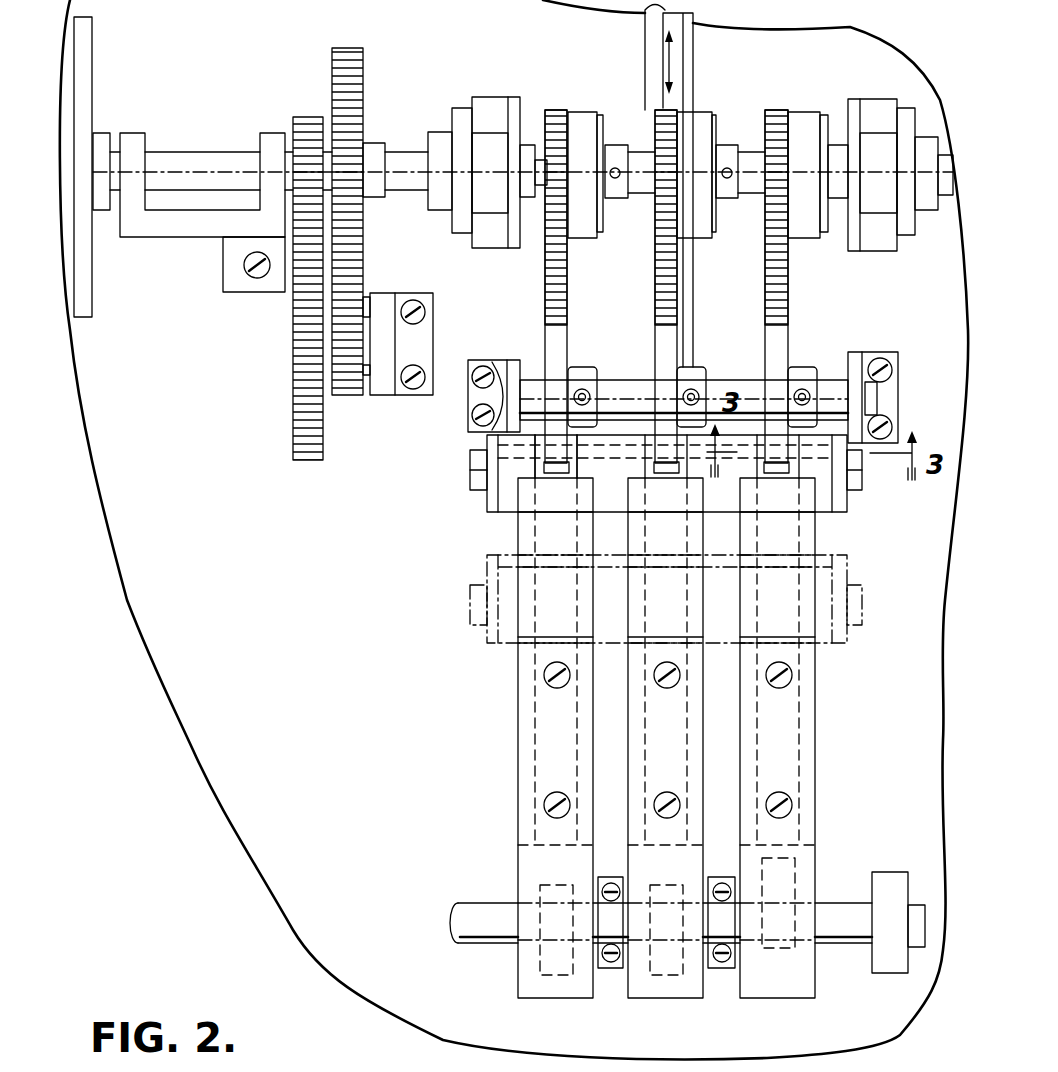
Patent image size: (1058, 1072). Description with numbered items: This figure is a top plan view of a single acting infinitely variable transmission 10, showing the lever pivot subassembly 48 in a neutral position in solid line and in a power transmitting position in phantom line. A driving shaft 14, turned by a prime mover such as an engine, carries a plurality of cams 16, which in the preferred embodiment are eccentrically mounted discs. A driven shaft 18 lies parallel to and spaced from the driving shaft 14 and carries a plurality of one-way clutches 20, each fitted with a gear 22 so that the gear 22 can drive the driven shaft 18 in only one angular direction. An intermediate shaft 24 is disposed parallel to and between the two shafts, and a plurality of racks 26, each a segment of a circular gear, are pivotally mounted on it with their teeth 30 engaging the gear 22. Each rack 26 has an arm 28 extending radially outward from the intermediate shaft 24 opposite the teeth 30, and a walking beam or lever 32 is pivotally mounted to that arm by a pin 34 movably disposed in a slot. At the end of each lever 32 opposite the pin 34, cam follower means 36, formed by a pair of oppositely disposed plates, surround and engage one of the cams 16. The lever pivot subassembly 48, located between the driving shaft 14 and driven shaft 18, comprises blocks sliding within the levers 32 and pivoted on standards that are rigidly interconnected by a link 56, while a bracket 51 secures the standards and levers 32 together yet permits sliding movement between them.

The single acting infinitely variable transmission 10 is at (327, 631).
The driving shaft 14 is at (452, 936).
The cams 16 is at (558, 976).
The driven shaft 18 is at (398, 160).
The one-way clutches 20 is at (585, 140).
The gear 22 is at (553, 108).
The intermediate shaft 24 is at (612, 380).
The racks 26 is at (545, 328).
The arm 28 is at (555, 426).
The teeth 30 is at (545, 281).
The lever 32 is at (557, 745).
The pin 34 is at (549, 478).
The cam follower means 36 is at (519, 967).
The lever pivot subassembly 48 is at (472, 494).
The bracket 51 is at (840, 508).
The link 56 is at (470, 465).